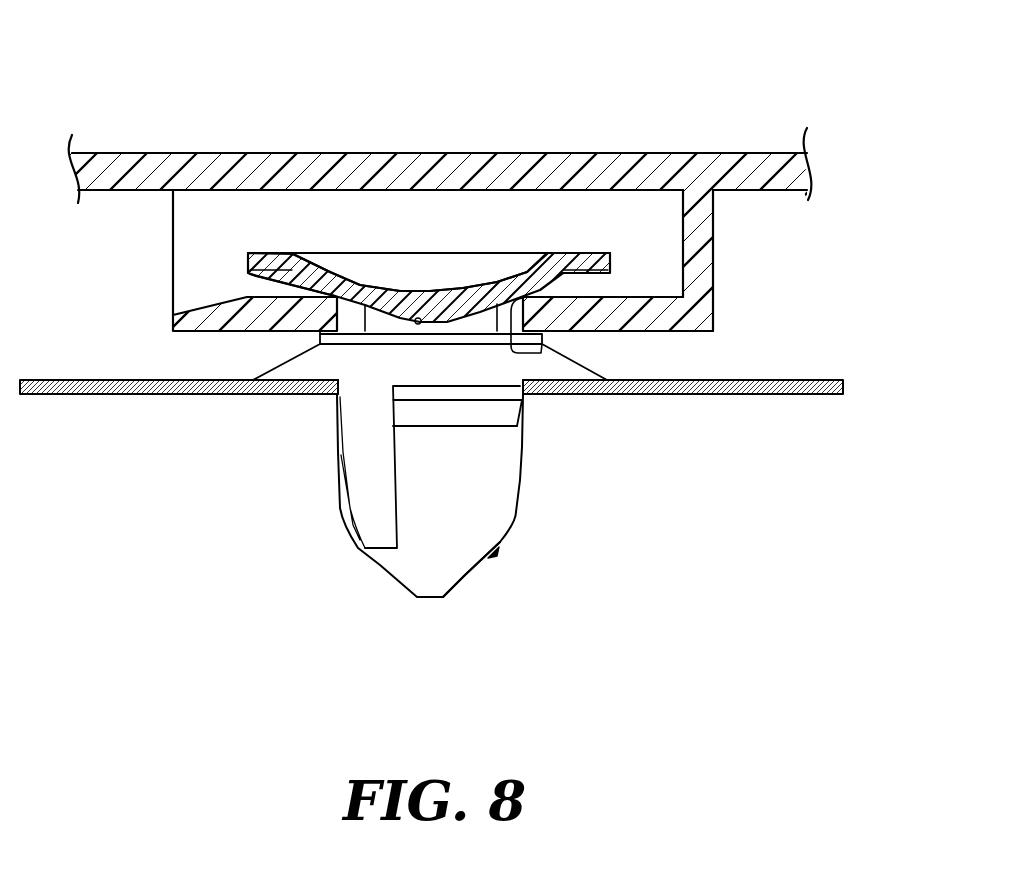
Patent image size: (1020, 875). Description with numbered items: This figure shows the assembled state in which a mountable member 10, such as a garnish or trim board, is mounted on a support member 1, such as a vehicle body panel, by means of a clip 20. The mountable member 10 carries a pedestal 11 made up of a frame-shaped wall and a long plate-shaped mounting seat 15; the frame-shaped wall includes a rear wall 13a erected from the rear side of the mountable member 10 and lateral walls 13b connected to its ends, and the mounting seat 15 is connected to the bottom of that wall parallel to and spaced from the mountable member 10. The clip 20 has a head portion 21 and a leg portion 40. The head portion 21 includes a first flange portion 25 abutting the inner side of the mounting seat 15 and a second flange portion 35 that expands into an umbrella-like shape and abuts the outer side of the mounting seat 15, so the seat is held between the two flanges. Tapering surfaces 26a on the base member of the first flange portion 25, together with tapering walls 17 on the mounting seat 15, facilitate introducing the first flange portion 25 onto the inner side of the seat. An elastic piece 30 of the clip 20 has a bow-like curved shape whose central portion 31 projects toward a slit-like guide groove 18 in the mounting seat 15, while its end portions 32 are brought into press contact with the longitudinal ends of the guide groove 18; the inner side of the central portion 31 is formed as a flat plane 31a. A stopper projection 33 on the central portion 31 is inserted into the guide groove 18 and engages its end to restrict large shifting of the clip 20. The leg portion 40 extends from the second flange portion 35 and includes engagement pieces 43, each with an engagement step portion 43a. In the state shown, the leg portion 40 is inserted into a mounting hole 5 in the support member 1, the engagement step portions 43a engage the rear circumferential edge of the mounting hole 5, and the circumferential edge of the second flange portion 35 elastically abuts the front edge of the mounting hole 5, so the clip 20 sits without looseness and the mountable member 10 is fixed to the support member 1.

The support member 1 is at (112, 396).
The mounting hole 5 is at (533, 393).
The mountable member 10 is at (400, 152).
The pedestal 11 is at (727, 223).
The rear wall 13a is at (707, 267).
The lateral wall 13b is at (615, 202).
The mounting seat 15 is at (645, 320).
The tapering wall 17 is at (183, 322).
The guide groove 18 is at (530, 345).
The clip 20 is at (389, 578).
The head portion 21 is at (239, 263).
The first flange portion 25 is at (621, 258).
The tapering surface 26a is at (261, 279).
The elastic piece 30 is at (433, 282).
The central portion 31 is at (413, 296).
The flat plane 31a is at (446, 288).
The end portion 32 is at (336, 284).
The stopper projection 33 is at (421, 323).
The second flange portion 35 is at (577, 372).
The leg portion 40 is at (515, 527).
The engagement piece 43 is at (500, 506).
The engagement step portion 43a is at (481, 395).